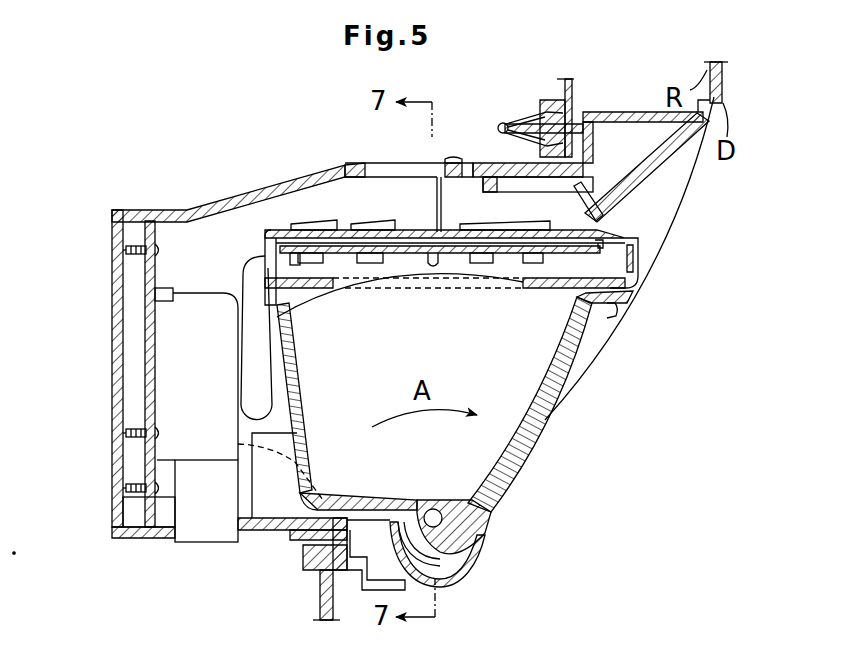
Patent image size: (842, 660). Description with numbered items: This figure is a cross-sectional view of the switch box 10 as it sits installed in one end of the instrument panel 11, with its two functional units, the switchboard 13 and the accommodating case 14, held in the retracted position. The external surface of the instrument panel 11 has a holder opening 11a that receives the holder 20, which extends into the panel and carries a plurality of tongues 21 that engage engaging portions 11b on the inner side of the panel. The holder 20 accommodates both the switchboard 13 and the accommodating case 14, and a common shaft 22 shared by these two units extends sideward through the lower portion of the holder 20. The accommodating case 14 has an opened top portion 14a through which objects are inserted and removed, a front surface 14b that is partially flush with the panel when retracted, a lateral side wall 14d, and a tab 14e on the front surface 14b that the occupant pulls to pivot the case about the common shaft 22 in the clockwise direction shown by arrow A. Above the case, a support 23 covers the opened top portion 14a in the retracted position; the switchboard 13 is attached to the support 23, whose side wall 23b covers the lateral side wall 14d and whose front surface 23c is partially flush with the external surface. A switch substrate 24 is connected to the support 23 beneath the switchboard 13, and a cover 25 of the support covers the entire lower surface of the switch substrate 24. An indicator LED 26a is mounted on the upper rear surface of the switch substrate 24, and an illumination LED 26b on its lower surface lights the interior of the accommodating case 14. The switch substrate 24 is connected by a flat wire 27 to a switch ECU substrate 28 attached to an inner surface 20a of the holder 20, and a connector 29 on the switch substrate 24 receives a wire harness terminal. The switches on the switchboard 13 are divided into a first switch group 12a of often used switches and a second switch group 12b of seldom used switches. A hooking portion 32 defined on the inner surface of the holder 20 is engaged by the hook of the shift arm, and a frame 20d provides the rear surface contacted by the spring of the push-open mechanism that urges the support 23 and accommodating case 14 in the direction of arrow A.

The switch box 10 is at (119, 175).
The instrument panel 11 is at (723, 83).
The holder opening 11a is at (693, 130).
The engaging portions 11b is at (576, 93).
The first switch group 12a is at (470, 221).
The second switch group 12b is at (355, 222).
The switchboard 13 is at (425, 215).
The accommodating case 14 is at (517, 457).
The opened top portion 14a is at (293, 300).
The front surface 14b is at (483, 510).
The lateral side wall 14d is at (520, 408).
The tab 14e is at (610, 307).
The holder 20 is at (226, 200).
The inner surface 20a is at (127, 317).
The frame 20d is at (680, 185).
The tongues 21 is at (504, 122).
The common shaft 22 is at (433, 508).
The support 23 is at (655, 252).
The side wall 23b is at (250, 474).
The front surface 23c is at (648, 267).
The switch substrate 24 is at (508, 278).
The cover 25 is at (383, 287).
The indicator LED 26a is at (607, 233).
The illumination LED 26b is at (443, 267).
The flat wire 27 is at (197, 296).
The switch ECU substrate 28 is at (157, 378).
The connector 29 is at (192, 545).
The hooking portion 32 is at (483, 190).